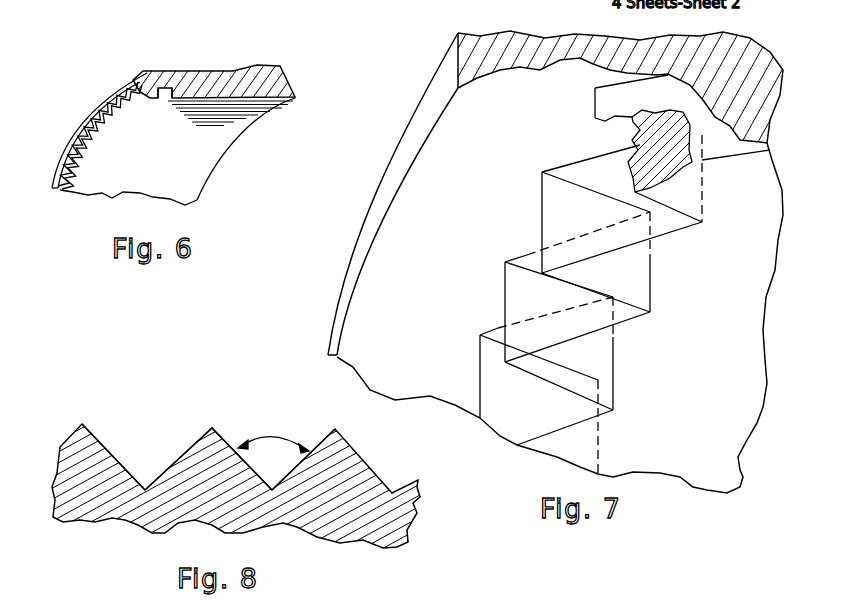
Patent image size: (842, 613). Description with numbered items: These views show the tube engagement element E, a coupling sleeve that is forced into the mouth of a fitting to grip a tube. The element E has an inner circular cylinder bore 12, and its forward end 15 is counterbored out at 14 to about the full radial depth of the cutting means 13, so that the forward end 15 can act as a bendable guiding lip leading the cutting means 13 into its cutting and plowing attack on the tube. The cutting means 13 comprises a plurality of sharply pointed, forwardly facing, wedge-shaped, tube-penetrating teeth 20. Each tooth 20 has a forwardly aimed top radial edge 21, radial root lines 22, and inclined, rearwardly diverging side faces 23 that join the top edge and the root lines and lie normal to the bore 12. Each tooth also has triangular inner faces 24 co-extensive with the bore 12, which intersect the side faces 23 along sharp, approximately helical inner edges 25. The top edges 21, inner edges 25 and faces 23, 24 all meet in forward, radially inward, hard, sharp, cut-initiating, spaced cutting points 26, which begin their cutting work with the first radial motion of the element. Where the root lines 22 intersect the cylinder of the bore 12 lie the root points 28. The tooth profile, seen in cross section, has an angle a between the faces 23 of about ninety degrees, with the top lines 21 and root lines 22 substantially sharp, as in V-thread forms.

In FIG. 6, the inner circular cylinder bore 12 is at (233, 123).
In FIG. 7, the inner circular cylinder bore 12 is at (560, 318).
In FIG. 6, the cutting means 13 is at (132, 128).
In FIG. 7, the cutting means 13 is at (500, 361).
In FIG. 7, the counterbore 14 is at (583, 190).
In FIG. 6, the forward end 15 is at (138, 73).
In FIG. 6, the teeth 20 is at (172, 93).
In FIG. 7, the teeth 20 is at (572, 176).
In FIG. 8, the teeth 20 is at (216, 422).
In FIG. 6, the top radial edge 21 is at (128, 93).
In FIG. 7, the top radial edge 21 is at (542, 215).
In FIG. 8, the top radial edge 21 is at (336, 428).
In FIG. 6, the root lines 22 is at (120, 128).
In FIG. 7, the root lines 22 is at (703, 163).
In FIG. 8, the root lines 22 is at (145, 482).
In FIG. 6, the side faces 23 is at (66, 172).
In FIG. 7, the side faces 23 is at (565, 299).
In FIG. 8, the side faces 23 is at (187, 450).
In FIG. 7, the triangular inner faces 24 is at (635, 305).
In FIG. 7, the inner edges 25 is at (650, 243).
In FIG. 6, the cutting points 26 is at (70, 200).
In FIG. 7, the cutting points 26 is at (527, 265).
In FIG. 6, the root points 28 is at (78, 176).
In FIG. 7, the root points 28 is at (702, 222).
In FIG. 6, the tube engagement element E is at (205, 170).
In FIG. 8, the angle between the faces a is at (273, 441).